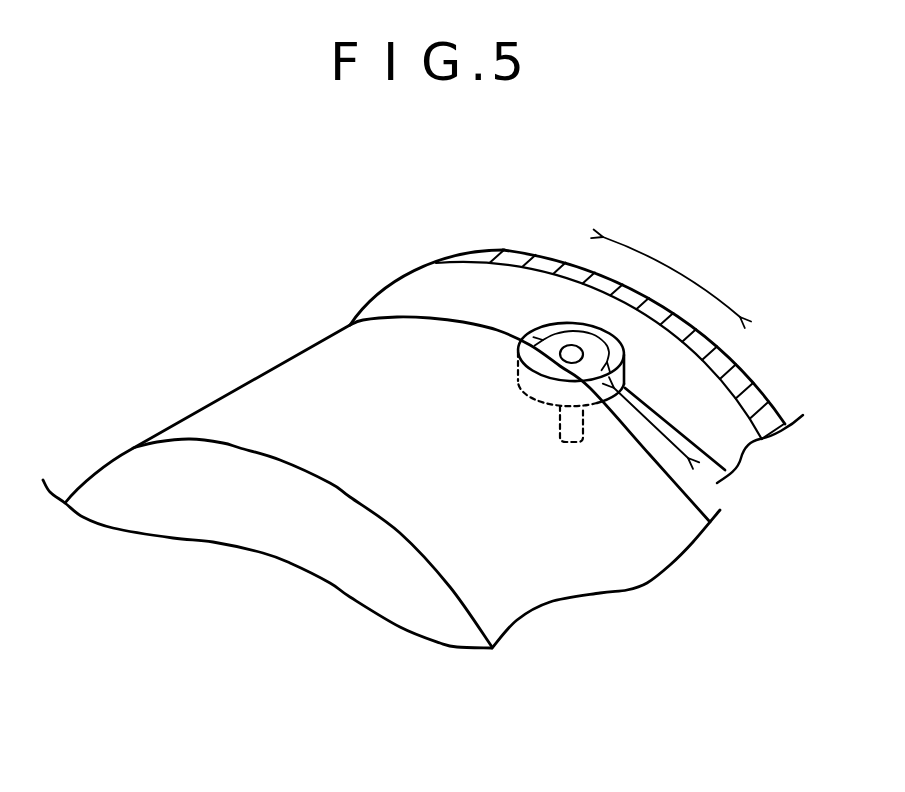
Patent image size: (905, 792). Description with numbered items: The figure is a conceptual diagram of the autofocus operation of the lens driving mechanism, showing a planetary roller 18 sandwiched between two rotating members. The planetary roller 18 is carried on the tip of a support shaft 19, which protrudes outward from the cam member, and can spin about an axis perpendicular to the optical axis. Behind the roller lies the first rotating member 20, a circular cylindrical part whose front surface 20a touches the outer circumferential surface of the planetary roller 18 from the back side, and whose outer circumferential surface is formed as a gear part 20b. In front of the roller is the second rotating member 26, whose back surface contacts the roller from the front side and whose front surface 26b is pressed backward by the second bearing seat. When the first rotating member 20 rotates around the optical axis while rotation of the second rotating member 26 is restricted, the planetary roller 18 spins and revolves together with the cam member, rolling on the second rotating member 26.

The planetary roller 18 is at (537, 343).
The support shaft 19 is at (588, 413).
The first rotating member 20 is at (745, 390).
The front surface 20a is at (480, 278).
The gear part 20b is at (530, 258).
The second rotating member 26 is at (247, 400).
The front surface 26b is at (305, 538).